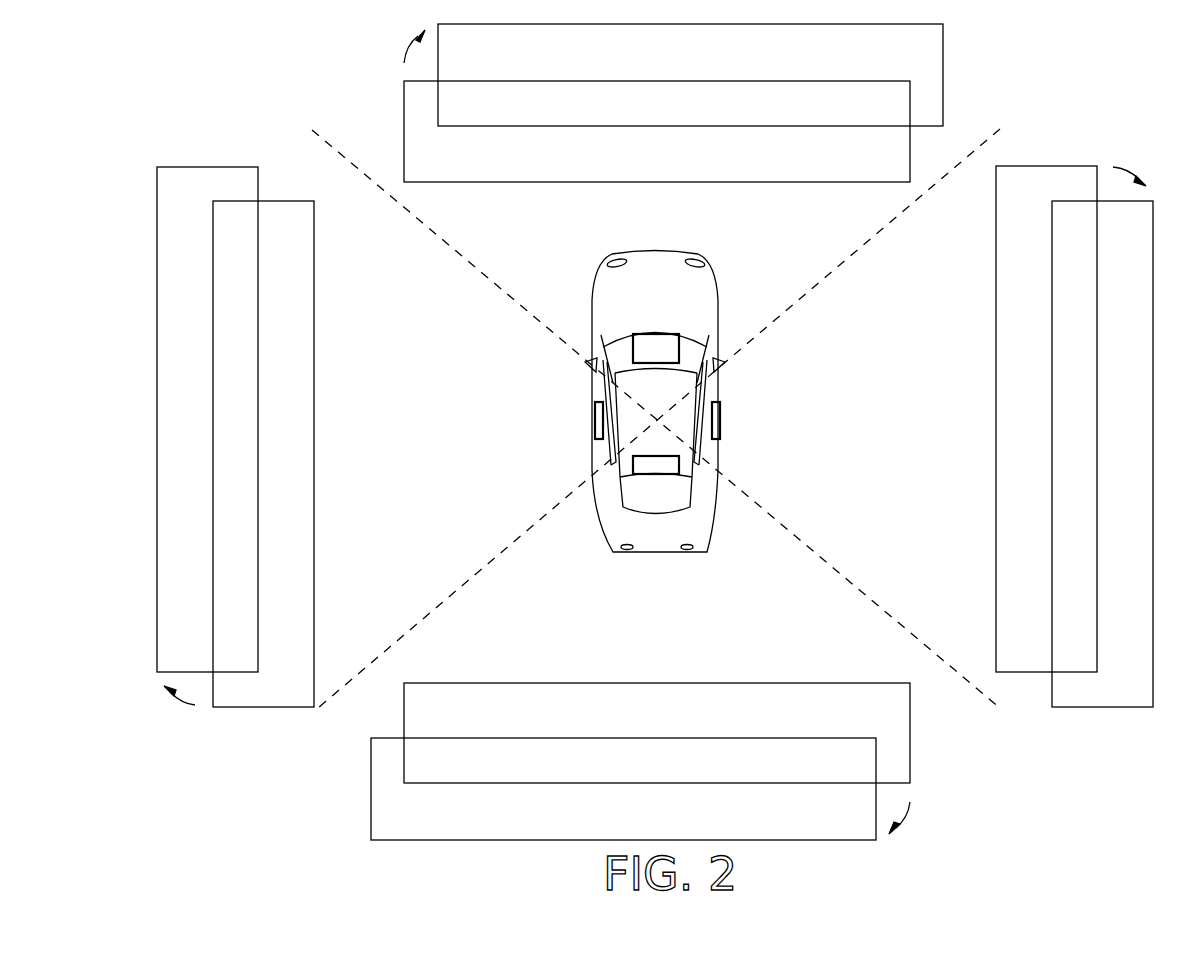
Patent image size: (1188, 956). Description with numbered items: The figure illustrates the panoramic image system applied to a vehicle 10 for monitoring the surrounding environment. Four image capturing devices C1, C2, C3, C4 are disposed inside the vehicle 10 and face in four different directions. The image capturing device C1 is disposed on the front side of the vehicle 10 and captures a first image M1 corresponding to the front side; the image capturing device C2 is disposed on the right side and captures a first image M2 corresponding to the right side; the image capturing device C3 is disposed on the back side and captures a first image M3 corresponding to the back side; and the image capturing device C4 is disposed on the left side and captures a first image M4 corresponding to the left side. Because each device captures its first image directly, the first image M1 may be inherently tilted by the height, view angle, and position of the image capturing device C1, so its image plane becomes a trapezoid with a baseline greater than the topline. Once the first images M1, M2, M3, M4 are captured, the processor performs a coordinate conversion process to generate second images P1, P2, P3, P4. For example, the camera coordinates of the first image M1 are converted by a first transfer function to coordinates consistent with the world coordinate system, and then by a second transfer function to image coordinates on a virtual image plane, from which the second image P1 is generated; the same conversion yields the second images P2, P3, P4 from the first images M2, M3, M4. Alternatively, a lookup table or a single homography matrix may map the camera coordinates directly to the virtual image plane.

The vehicle 10 is at (722, 295).
The image capturing device C1 is at (659, 345).
The image capturing device C2 is at (719, 421).
The image capturing device C3 is at (655, 465).
The image capturing device C4 is at (595, 421).
The second image P1 is at (673, 75).
The second image P2 is at (1102, 454).
The second image P3 is at (640, 789).
The second image P4 is at (207, 436).
The first image M1 is at (657, 131).
The first image M2 is at (1071, 419).
The first image M3 is at (657, 733).
The first image M4 is at (263, 454).